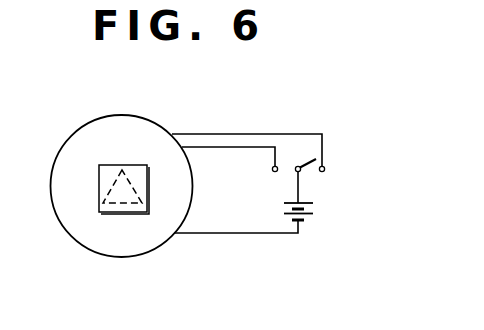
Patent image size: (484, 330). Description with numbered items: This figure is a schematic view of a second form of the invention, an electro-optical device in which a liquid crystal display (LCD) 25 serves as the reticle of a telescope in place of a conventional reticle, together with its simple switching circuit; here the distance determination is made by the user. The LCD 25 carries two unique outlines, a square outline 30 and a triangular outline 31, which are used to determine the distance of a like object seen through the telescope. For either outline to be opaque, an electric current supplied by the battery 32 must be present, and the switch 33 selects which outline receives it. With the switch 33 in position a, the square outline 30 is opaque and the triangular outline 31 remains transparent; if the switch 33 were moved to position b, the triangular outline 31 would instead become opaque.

The liquid crystal display 25 is at (158, 123).
The square outline 30 is at (100, 190).
The triangular outline 31 is at (104, 197).
The battery 32 is at (312, 217).
The switch 33 is at (308, 163).
The switch position a is at (325, 170).
The switch position b is at (272, 171).